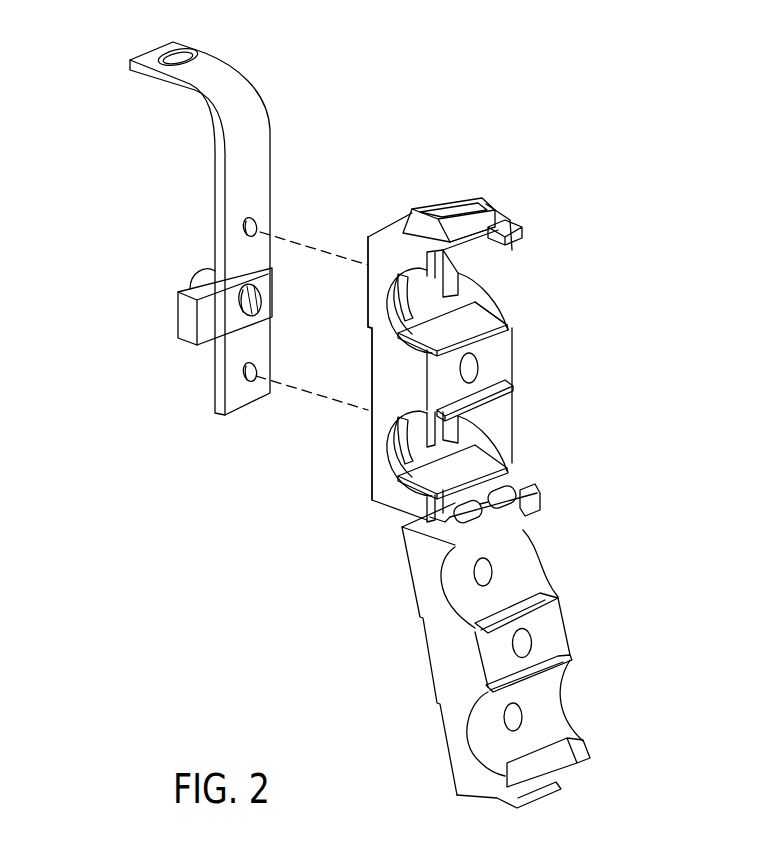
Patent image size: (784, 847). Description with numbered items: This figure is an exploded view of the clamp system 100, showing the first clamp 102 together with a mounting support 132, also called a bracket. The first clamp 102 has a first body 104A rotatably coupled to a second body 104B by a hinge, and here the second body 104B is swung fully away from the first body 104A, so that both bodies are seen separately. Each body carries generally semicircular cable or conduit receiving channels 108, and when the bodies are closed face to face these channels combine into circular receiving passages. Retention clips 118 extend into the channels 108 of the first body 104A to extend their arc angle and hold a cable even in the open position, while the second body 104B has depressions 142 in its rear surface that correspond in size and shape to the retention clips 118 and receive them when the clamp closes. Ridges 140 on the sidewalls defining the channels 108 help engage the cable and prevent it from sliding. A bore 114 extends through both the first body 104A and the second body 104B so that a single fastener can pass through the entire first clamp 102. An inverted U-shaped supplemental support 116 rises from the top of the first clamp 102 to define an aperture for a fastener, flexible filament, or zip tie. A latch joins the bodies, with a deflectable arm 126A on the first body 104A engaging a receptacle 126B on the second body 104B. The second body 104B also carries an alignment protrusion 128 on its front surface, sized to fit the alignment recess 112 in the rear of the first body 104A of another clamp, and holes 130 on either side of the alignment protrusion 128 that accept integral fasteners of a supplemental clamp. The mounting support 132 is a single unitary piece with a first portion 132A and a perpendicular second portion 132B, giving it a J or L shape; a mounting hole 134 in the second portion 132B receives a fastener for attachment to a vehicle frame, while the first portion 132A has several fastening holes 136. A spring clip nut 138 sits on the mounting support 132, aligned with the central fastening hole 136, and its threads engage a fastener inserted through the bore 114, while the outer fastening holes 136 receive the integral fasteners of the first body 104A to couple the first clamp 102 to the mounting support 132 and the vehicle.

The clamp system 100 is at (118, 191).
The first clamp 102 is at (640, 468).
The first body 104A is at (397, 387).
The second body 104B is at (445, 647).
The cable or conduit receiving channel 108 is at (392, 304).
The alignment recess 112 is at (368, 358).
The bore 114 is at (480, 368).
The supplemental support 116 is at (450, 202).
The retention clip 118 is at (507, 322).
The deflectable arm 126A is at (495, 237).
The receptacle 126B is at (540, 792).
The alignment protrusion 128 is at (428, 677).
The hole 130 is at (474, 576).
The mounting support 132 is at (248, 153).
The first portion 132A is at (244, 337).
The second portion 132B is at (207, 68).
The mounting hole 134 is at (188, 56).
The fastening hole 136 is at (255, 224).
The spring clip nut 138 is at (190, 315).
The ridge 140 is at (464, 432).
The depression 142 is at (515, 607).